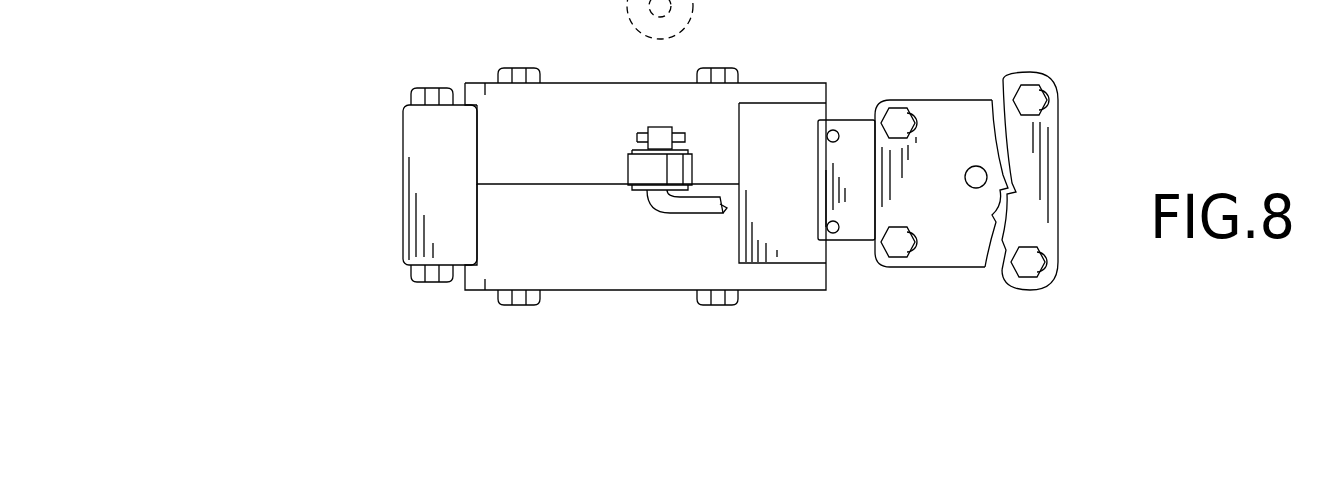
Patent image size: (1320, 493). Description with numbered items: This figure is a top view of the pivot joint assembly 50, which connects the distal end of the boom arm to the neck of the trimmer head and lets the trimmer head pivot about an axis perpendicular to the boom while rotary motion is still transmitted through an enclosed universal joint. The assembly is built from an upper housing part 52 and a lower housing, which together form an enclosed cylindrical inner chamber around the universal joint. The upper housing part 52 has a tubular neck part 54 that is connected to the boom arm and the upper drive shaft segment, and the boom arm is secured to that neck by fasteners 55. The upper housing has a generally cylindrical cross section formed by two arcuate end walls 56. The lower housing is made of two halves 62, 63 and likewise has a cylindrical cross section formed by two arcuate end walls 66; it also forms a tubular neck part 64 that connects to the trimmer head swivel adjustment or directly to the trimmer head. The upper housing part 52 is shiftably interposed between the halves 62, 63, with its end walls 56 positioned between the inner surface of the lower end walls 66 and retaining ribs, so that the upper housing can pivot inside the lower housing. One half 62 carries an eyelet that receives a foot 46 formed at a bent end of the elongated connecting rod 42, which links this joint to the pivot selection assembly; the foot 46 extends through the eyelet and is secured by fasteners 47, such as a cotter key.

The rod 42 is at (693, 208).
The foot 46 is at (663, 137).
The fasteners 47 is at (678, 132).
The pivot joint assembly 50 is at (342, 218).
The upper housing part 52 is at (825, 255).
The tubular neck part 54 is at (955, 132).
The fasteners 55 is at (899, 118).
The arcuate end walls 56 is at (797, 128).
The half 62 is at (551, 122).
The half 63 is at (555, 258).
The tubular neck part 64 is at (432, 142).
The arcuate end walls 66 is at (627, 288).